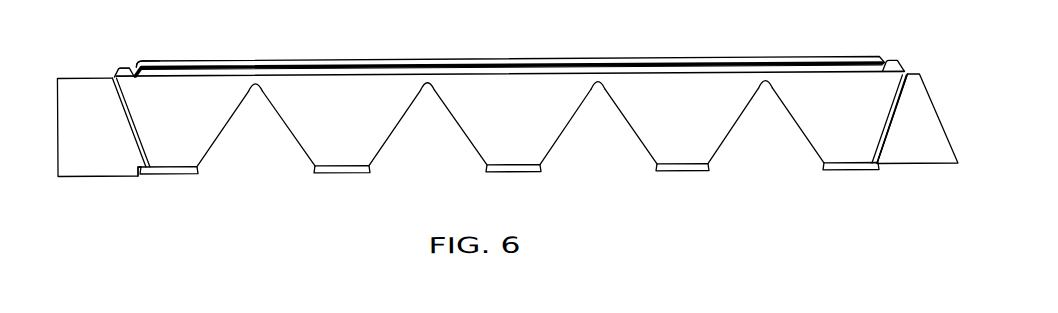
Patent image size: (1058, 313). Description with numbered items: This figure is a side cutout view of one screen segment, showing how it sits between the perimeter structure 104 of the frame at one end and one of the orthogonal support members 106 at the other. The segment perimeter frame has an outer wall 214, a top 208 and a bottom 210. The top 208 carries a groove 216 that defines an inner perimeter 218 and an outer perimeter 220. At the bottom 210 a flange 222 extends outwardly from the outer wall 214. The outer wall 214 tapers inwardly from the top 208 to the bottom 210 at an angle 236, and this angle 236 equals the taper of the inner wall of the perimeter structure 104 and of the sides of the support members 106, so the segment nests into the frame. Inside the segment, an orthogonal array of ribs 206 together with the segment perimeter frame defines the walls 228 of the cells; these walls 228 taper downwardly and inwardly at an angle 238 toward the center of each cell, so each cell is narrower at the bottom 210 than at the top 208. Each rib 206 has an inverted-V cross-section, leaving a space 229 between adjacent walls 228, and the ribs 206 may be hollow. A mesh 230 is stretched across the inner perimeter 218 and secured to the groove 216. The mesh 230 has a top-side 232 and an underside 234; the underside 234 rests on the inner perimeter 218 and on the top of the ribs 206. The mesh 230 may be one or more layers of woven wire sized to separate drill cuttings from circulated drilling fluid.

The perimeter structure 104 is at (67, 78).
The support members 106 is at (911, 79).
The ribs 206 is at (427, 87).
The top 208 is at (125, 64).
The bottom 210 is at (143, 177).
The outer wall 214 is at (135, 126).
The groove 216 is at (137, 77).
The inner perimeter 218 is at (144, 63).
The outer perimeter 220 is at (117, 71).
The flange 222 is at (199, 175).
The walls 228 is at (221, 130).
The space 229 is at (245, 163).
The mesh 230 is at (350, 59).
The top-side 232 is at (415, 55).
The underside 234 is at (467, 74).
The angle 236 is at (905, 93).
The angle 238 is at (257, 87).